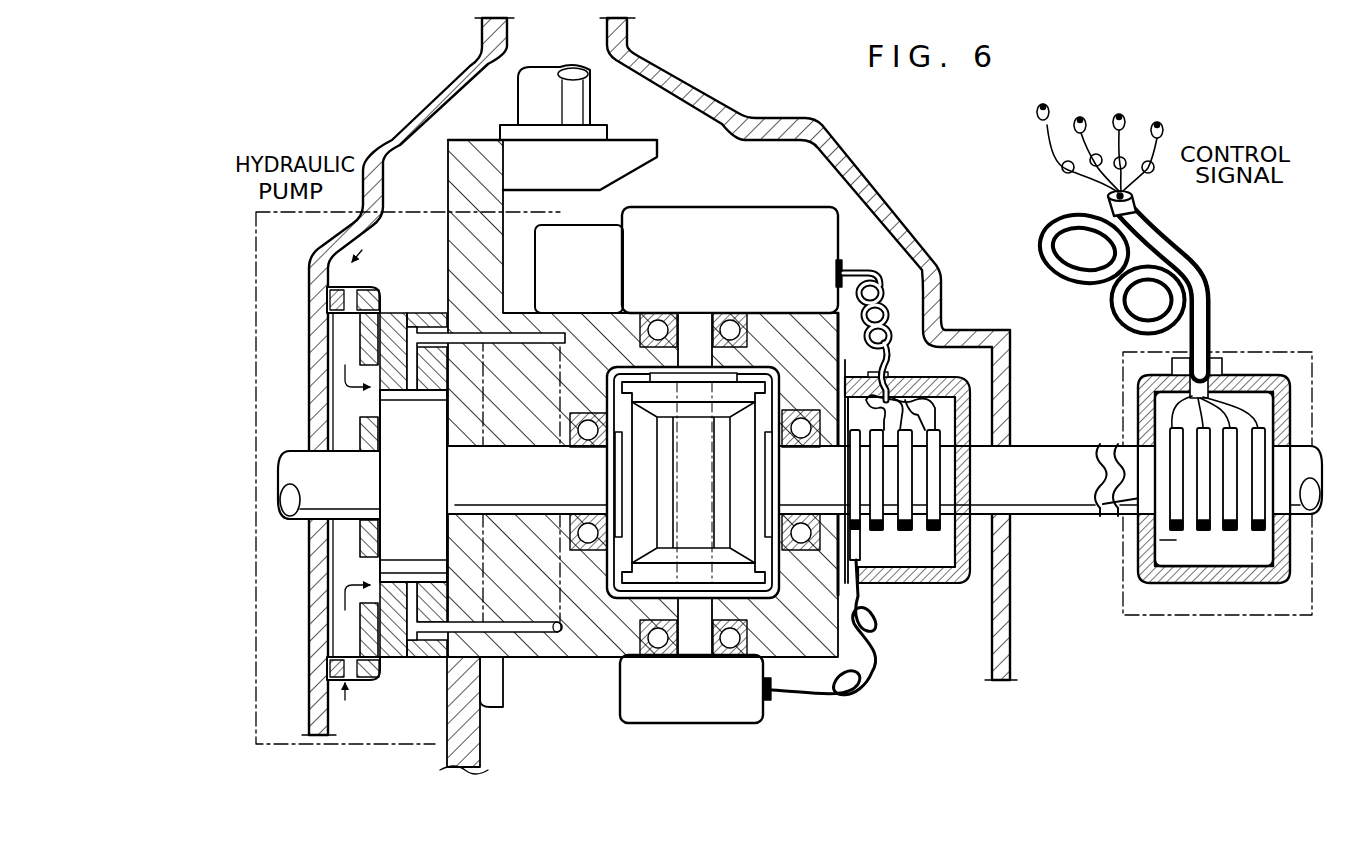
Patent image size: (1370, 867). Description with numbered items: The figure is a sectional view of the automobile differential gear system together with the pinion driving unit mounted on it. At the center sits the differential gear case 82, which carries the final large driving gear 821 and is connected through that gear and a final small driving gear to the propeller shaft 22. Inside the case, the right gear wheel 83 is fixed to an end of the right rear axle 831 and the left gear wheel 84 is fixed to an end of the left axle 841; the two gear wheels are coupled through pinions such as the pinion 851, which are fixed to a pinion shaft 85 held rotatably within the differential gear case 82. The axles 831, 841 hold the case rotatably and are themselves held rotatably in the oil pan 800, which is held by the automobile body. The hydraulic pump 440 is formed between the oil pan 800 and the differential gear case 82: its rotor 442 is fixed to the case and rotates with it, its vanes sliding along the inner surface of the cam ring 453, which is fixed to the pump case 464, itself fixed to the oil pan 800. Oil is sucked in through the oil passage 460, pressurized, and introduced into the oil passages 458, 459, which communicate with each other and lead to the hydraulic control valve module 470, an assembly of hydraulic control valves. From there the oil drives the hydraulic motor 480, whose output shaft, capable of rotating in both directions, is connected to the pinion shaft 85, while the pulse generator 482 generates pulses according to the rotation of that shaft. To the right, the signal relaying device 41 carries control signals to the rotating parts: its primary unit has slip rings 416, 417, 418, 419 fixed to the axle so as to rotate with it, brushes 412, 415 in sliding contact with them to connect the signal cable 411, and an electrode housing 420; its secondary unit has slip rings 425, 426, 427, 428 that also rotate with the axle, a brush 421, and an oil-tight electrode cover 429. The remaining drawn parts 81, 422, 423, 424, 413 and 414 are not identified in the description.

The propeller shaft 22 is at (588, 95).
The mounting plate 81 is at (635, 148).
The hydraulic pump 440 is at (322, 421).
The cam ring 453 is at (392, 312).
The hydraulic control valve module 470 is at (547, 200).
The hydraulic motor 480 is at (727, 213).
The pinion 851 is at (750, 392).
The oil passage 458 is at (517, 343).
The left axle 841 is at (293, 455).
The rotor 442 is at (392, 476).
The oil pan 800 is at (312, 600).
The pump case 464 is at (365, 636).
The oil passage 460 is at (345, 700).
The final large driving gear 821 is at (447, 728).
The differential gear case 82 is at (531, 658).
The oil passage 459 is at (520, 632).
The left gear wheel 84 is at (686, 539).
The pulse generator 482 is at (704, 720).
The pinion shaft 85 is at (752, 582).
The right gear wheel 83 is at (865, 632).
The oil-tight electrode cover 429 is at (945, 585).
The clutch plate tab 424 is at (858, 546).
The slip ring 425 is at (936, 491).
The slip ring 426 is at (905, 458).
The slip ring 427 is at (873, 482).
The slip ring 428 is at (852, 462).
The brush 421 is at (935, 430).
The actuating lever 422 is at (893, 430).
The support plate 423 is at (853, 400).
The right rear axle 831 is at (1048, 510).
The signal cable 411 is at (1212, 283).
The cable connector 413 is at (1237, 395).
The brush 412 is at (1280, 402).
The terminal 414 is at (1172, 395).
The brush 415 is at (1172, 420).
The slip ring 419 is at (1173, 536).
The electrode housing 420 is at (1162, 583).
The slip ring 418 is at (1203, 535).
The slip ring 417 is at (1230, 535).
The slip ring 416 is at (1258, 535).
The signal relaying device 41 is at (1214, 498).